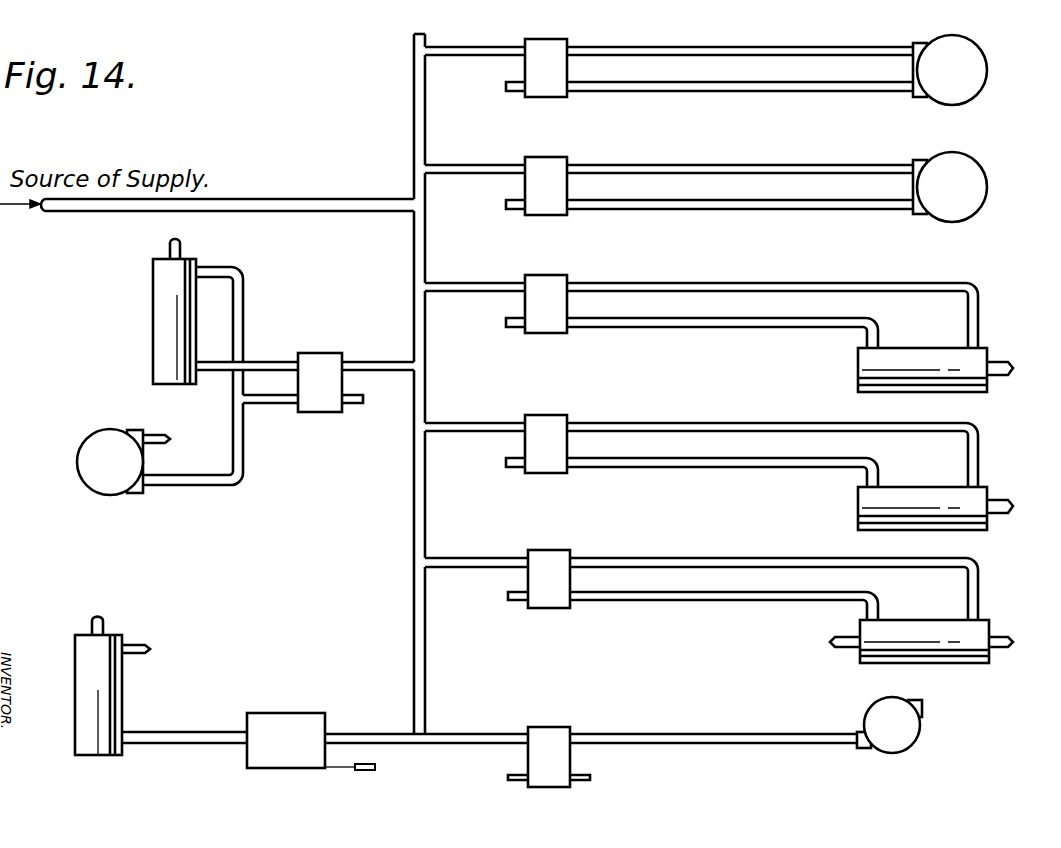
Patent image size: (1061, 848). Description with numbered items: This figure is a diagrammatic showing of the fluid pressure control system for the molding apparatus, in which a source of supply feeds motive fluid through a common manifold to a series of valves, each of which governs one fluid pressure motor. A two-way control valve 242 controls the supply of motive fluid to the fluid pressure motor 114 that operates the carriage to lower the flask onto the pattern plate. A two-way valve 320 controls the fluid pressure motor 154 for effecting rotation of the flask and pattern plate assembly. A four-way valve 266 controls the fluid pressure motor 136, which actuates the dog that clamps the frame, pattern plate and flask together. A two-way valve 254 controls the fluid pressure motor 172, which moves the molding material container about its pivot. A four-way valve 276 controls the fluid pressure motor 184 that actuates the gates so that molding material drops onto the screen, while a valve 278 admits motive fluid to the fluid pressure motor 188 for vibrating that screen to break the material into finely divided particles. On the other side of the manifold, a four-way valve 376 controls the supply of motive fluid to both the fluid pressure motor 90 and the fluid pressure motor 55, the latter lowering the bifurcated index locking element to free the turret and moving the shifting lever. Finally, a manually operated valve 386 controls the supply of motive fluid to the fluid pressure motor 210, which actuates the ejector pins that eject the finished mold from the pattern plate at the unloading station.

The fluid pressure motor 55 is at (158, 329).
The fluid pressure motor 90 is at (100, 436).
The fluid pressure motor 114 is at (957, 47).
The fluid pressure motor 136 is at (920, 356).
The fluid pressure motor 154 is at (955, 161).
The fluid pressure motor 172 is at (915, 493).
The fluid pressure motor 184 is at (921, 629).
The fluid pressure motor 188 is at (897, 707).
The fluid pressure motor 210 is at (113, 693).
The two-way control valve 242 is at (552, 50).
The two-way valve 254 is at (551, 425).
The four-way valve 266 is at (551, 284).
The four-way valve 276 is at (553, 558).
The valve 278 is at (556, 733).
The two-way valve 320 is at (553, 165).
The four-way valve 376 is at (317, 363).
The manually operated valve 386 is at (290, 720).